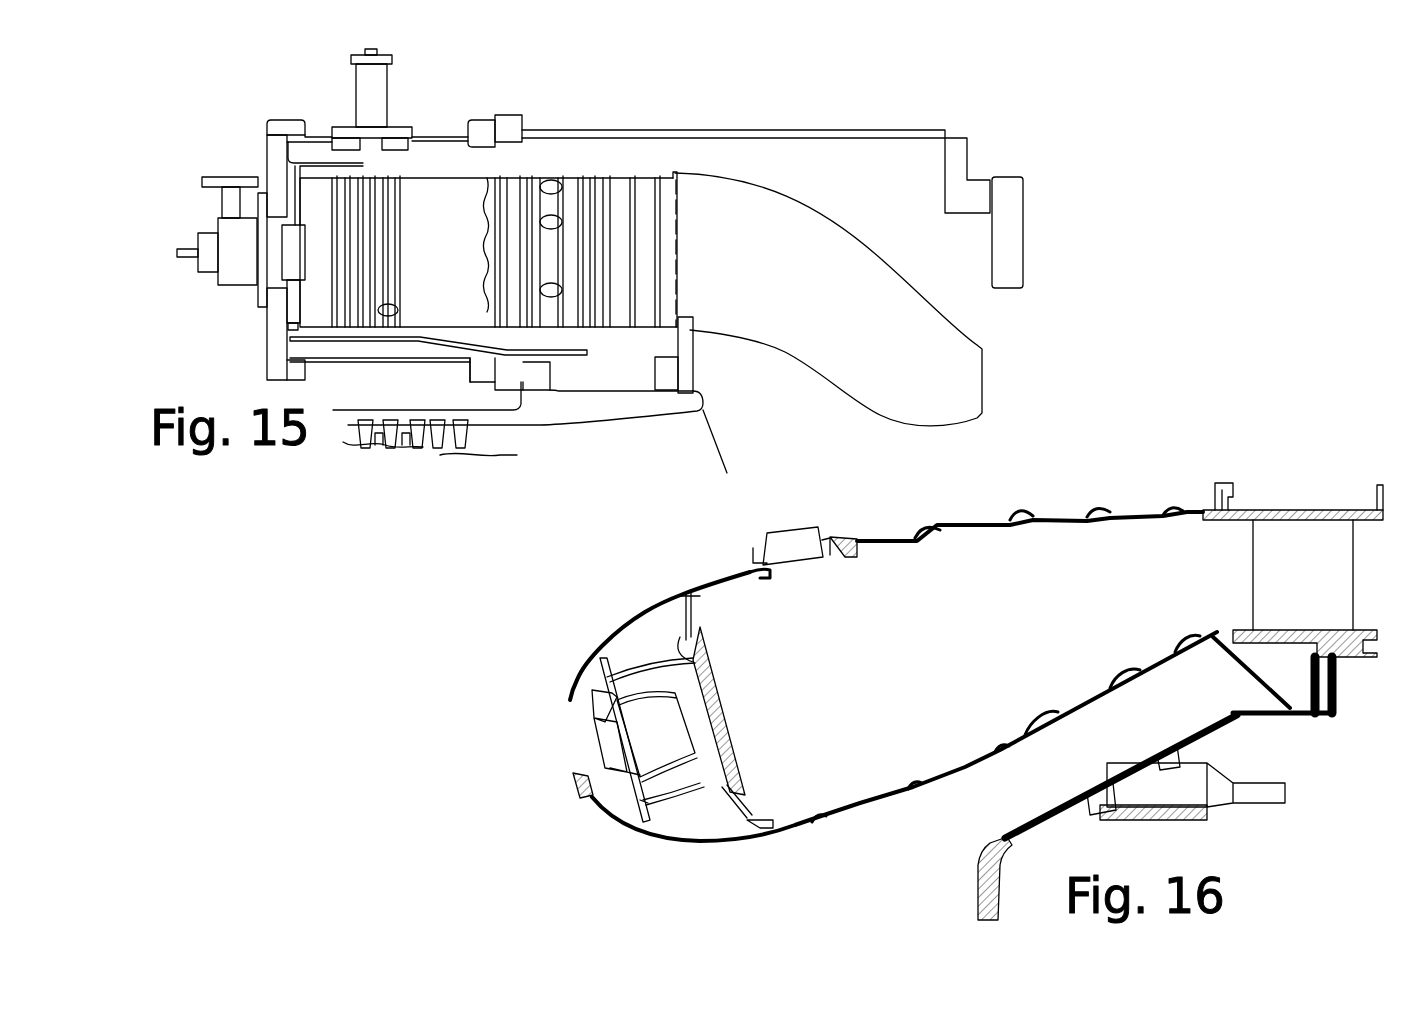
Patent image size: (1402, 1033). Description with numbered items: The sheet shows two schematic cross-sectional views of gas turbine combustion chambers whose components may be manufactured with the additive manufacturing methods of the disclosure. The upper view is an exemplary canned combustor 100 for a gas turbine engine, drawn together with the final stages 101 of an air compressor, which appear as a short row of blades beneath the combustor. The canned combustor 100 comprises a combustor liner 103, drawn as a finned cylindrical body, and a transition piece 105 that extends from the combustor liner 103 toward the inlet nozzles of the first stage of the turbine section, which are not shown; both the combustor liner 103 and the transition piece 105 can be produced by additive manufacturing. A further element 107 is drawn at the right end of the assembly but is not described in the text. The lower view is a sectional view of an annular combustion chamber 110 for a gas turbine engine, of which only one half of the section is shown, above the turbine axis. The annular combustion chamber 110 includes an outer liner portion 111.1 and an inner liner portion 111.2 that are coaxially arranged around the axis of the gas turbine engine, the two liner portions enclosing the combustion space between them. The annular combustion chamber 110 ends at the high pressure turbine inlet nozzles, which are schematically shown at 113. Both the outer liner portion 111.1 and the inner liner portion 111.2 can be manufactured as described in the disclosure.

In FIG. 15, the canned combustor 100 is at (565, 122).
In FIG. 15, the final stages of an air compressor 101 is at (468, 435).
In FIG. 15, the combustor liner 103 is at (642, 172).
In FIG. 15, the transition piece 105 is at (792, 194).
In FIG. 15, the mounting block 107 is at (1004, 176).
In FIG. 16, the annular combustion chamber 110 is at (856, 524).
In FIG. 16, the outer liner portion 111.1 is at (925, 545).
In FIG. 16, the inner liner portion 111.2 is at (1003, 733).
In FIG. 16, the high pressure turbine inlet nozzles 113 is at (1303, 543).